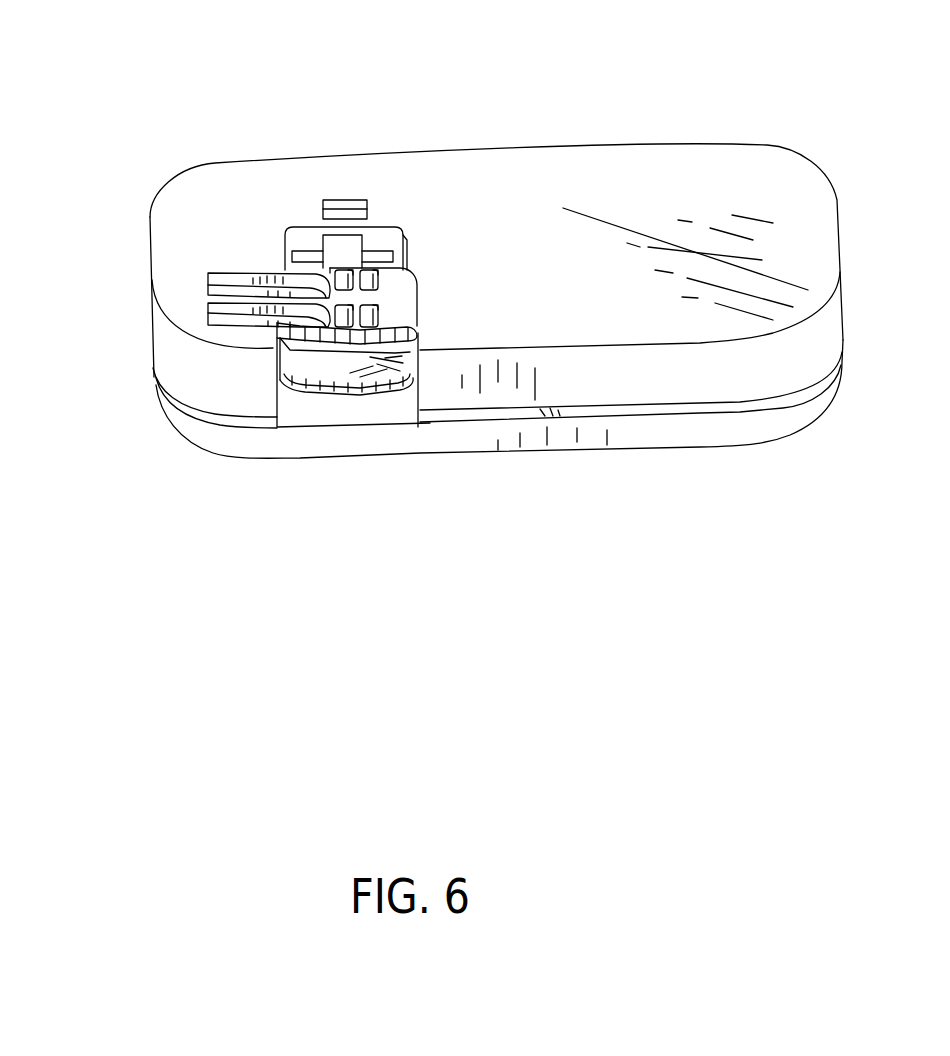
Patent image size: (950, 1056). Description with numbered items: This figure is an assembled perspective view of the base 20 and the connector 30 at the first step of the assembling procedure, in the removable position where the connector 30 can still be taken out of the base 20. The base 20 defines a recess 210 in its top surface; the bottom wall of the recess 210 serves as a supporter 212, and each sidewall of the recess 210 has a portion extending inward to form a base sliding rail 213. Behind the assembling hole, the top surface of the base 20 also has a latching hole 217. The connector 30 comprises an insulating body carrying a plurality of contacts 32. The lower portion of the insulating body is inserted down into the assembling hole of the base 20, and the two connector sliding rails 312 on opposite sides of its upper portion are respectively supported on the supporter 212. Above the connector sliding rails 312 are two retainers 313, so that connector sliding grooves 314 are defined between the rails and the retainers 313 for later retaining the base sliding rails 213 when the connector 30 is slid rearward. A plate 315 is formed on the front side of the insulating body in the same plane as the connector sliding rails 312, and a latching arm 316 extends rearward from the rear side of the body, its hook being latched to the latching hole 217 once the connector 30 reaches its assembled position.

The base 20 is at (723, 185).
The recess 210 is at (367, 405).
The supporter 212 is at (295, 263).
The base sliding rail 213 is at (410, 253).
The latching hole 217 is at (341, 208).
The connector 30 is at (393, 297).
The contacts 32 is at (217, 275).
The connector sliding rails 312 is at (283, 350).
The retainers 313 is at (277, 333).
The connector sliding grooves 314 is at (410, 335).
The plate 315 is at (333, 370).
The latching arm 316 is at (343, 250).